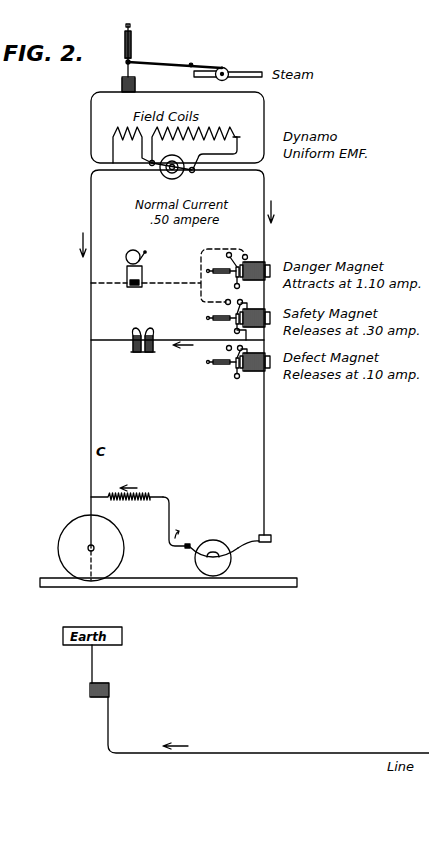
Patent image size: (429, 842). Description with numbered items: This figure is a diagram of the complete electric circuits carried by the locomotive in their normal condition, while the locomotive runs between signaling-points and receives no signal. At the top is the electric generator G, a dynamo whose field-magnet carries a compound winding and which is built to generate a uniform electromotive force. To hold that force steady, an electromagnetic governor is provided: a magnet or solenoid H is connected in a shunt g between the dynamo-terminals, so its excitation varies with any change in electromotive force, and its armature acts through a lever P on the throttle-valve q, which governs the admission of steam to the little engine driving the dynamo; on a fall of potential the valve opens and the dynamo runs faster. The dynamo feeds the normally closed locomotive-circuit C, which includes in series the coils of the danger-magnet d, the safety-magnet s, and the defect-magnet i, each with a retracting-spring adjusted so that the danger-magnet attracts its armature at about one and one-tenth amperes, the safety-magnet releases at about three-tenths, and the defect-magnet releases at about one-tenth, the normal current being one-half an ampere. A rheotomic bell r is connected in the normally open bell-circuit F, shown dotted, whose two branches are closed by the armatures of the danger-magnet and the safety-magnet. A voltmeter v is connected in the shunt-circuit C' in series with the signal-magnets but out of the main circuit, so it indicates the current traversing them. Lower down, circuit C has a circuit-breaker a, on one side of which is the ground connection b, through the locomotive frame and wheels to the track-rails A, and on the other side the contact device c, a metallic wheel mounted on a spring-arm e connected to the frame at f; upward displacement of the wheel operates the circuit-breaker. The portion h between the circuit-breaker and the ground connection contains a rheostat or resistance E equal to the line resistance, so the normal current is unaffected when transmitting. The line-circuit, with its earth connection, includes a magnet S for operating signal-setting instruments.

The magnet or solenoid H is at (119, 58).
The lever P is at (172, 62).
The throttle-valve q is at (228, 65).
The shunt g is at (247, 95).
The electric generator G is at (157, 176).
The normally closed locomotive-circuit C is at (273, 356).
The rheotomic bell r is at (131, 268).
The bell-circuit F is at (183, 285).
The danger-magnet d is at (239, 268).
The safety-magnet s is at (239, 317).
The shunt-circuit C' is at (177, 336).
The voltmeter v is at (143, 347).
The defect-magnet i is at (239, 359).
The ground connection b is at (91, 542).
The rheostat or resistance E is at (127, 494).
The portion of the normally closed circuit h is at (174, 520).
The circuit-breaker a is at (184, 554).
The contact device c is at (226, 563).
The spring-arm e is at (248, 548).
The frame connection f is at (272, 541).
The track-rails A is at (278, 583).
The magnet S is at (109, 689).